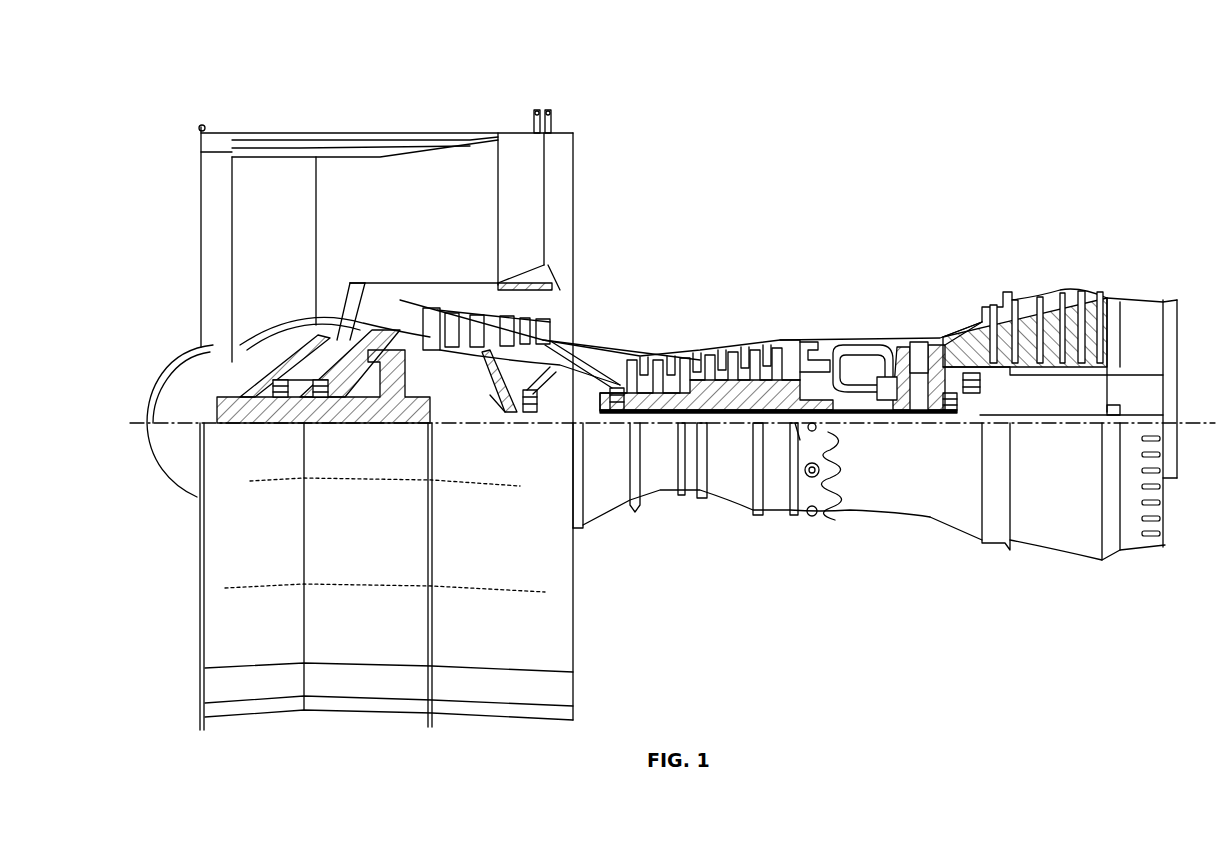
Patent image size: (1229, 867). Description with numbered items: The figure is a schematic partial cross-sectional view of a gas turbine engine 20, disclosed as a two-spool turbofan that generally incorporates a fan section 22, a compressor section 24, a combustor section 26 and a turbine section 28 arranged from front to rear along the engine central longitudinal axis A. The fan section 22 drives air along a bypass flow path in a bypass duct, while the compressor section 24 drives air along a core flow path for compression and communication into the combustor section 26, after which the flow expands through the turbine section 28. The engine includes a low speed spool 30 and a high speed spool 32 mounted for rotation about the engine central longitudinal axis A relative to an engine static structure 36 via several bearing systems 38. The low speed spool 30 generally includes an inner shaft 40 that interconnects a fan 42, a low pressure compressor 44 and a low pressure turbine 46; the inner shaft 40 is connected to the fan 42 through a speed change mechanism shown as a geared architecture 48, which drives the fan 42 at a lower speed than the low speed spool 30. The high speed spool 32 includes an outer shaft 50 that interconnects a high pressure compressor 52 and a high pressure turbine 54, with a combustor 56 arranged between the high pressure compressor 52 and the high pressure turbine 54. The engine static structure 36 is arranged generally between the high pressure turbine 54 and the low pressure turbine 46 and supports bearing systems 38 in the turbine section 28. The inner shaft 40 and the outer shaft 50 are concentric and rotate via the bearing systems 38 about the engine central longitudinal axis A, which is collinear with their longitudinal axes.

The gas turbine engine 20 is at (1027, 160).
The fan section 22 is at (318, 124).
The compressor section 24 is at (632, 323).
The combustor section 26 is at (853, 312).
The turbine section 28 is at (993, 288).
The low speed spool 30 is at (748, 426).
The high speed spool 32 is at (788, 348).
The engine static structure 36 is at (778, 516).
The bearing systems 38 is at (525, 412).
The inner shaft 40 is at (585, 428).
The fan 42 is at (292, 229).
The low pressure compressor 44 is at (556, 287).
The low pressure turbine 46 is at (1050, 300).
The geared architecture 48 is at (382, 397).
The outer shaft 50 is at (860, 426).
The high pressure compressor 52 is at (722, 352).
The high pressure turbine 54 is at (920, 340).
The combustor 56 is at (866, 350).
The engine central longitudinal axis A is at (1185, 415).